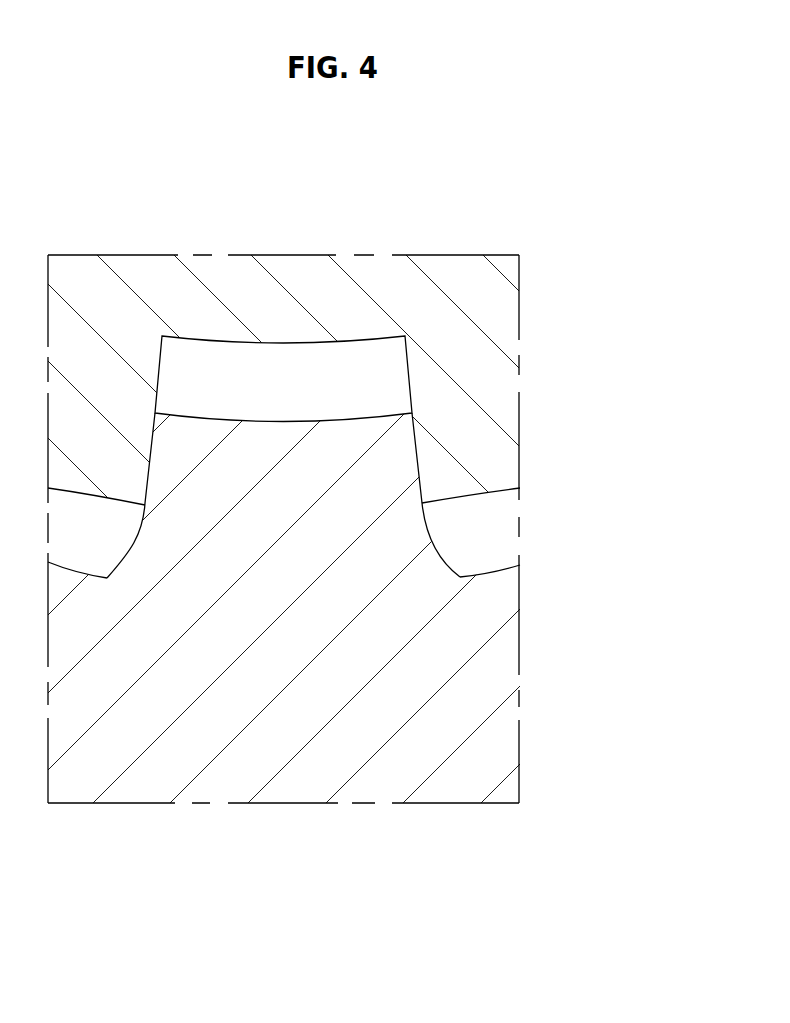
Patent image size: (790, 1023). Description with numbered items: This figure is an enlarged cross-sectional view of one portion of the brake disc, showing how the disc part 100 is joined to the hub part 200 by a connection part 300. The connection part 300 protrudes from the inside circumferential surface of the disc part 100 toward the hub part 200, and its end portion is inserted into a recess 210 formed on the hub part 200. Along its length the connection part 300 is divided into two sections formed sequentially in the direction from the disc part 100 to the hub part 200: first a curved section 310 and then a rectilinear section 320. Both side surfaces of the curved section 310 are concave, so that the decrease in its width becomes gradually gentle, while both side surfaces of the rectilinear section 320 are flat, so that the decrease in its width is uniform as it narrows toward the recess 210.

The disc part 100 is at (495, 732).
The hub part 200 is at (378, 287).
The recess 210 is at (285, 387).
The connection part 300 is at (303, 473).
The curved section 310 is at (438, 548).
The rectilinear section 320 is at (422, 470).